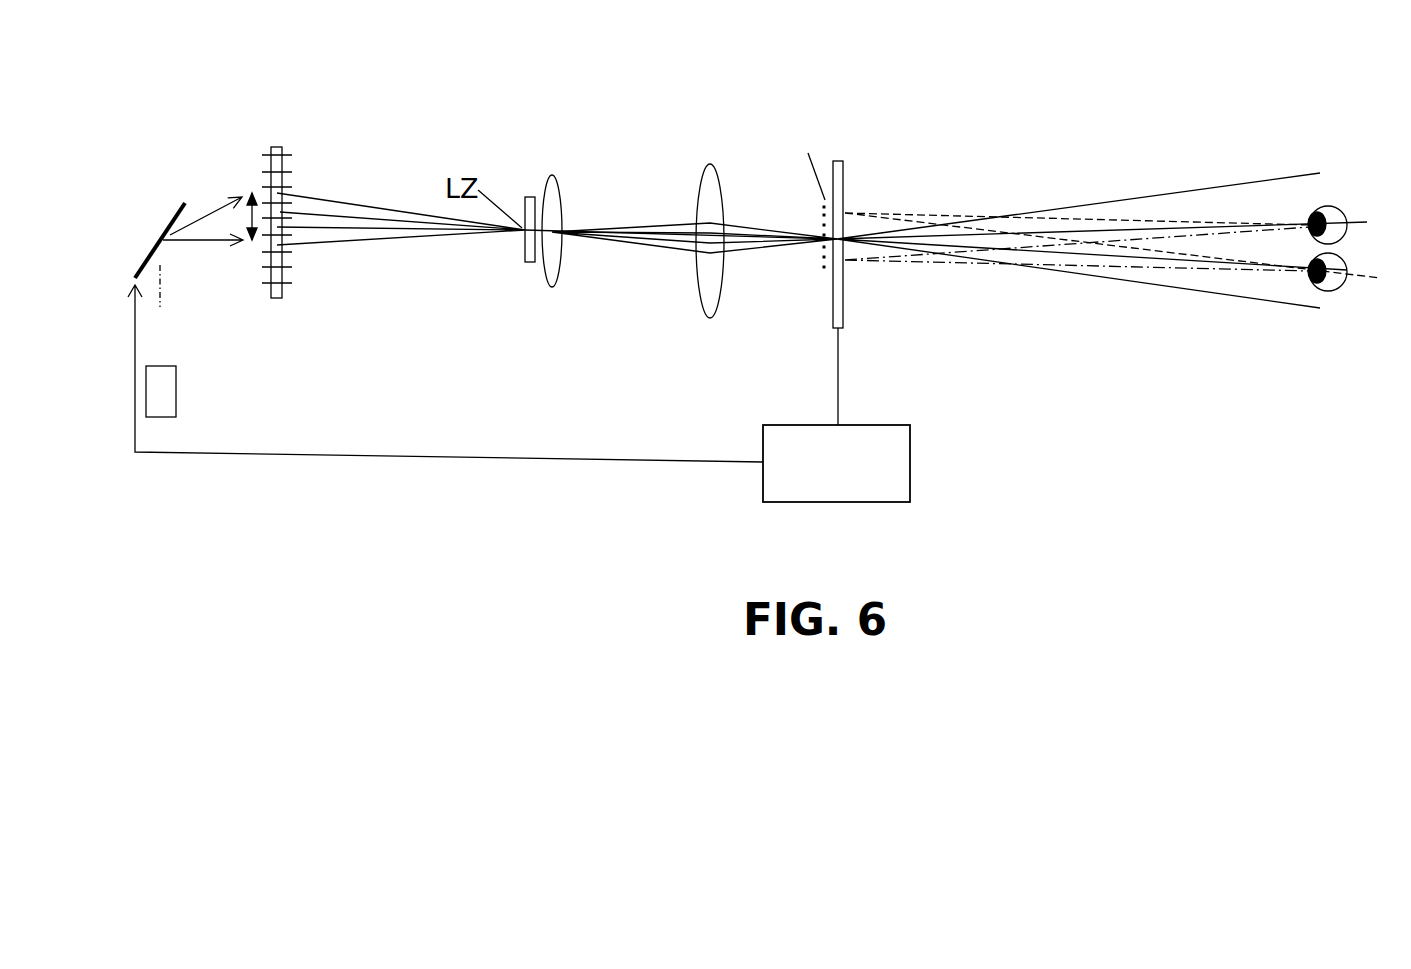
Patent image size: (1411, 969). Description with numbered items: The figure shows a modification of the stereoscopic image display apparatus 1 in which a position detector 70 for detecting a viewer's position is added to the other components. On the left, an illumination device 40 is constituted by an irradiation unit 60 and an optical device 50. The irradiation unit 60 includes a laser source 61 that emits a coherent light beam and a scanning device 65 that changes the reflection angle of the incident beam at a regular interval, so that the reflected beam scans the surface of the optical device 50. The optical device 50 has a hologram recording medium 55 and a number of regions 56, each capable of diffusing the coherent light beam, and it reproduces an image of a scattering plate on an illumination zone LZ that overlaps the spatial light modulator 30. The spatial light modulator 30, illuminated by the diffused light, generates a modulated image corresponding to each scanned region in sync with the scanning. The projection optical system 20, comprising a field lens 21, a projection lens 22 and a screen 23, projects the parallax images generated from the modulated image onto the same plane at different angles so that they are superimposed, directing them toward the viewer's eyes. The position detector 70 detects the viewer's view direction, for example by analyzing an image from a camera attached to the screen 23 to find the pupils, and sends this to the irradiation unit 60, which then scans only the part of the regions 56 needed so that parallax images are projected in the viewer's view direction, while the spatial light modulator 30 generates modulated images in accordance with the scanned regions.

The stereoscopic image display apparatus 1 is at (268, 496).
The projection optical system 20 is at (1357, 130).
The field lens 21 is at (555, 185).
The projection lens 22 is at (710, 168).
The screen 23 is at (843, 177).
The spatial light modulator 30 is at (528, 198).
The illumination device 40 is at (497, 128).
The optical device 50 is at (320, 150).
The hologram recording medium 55 is at (282, 298).
The regions 56 is at (270, 293).
The irradiation unit 60 is at (210, 178).
The laser source 61 is at (173, 392).
The scanning device 65 is at (163, 228).
The position detector 70 is at (912, 452).